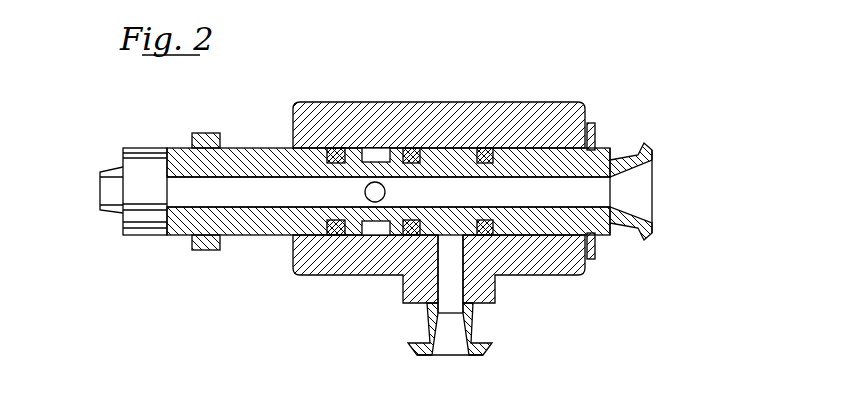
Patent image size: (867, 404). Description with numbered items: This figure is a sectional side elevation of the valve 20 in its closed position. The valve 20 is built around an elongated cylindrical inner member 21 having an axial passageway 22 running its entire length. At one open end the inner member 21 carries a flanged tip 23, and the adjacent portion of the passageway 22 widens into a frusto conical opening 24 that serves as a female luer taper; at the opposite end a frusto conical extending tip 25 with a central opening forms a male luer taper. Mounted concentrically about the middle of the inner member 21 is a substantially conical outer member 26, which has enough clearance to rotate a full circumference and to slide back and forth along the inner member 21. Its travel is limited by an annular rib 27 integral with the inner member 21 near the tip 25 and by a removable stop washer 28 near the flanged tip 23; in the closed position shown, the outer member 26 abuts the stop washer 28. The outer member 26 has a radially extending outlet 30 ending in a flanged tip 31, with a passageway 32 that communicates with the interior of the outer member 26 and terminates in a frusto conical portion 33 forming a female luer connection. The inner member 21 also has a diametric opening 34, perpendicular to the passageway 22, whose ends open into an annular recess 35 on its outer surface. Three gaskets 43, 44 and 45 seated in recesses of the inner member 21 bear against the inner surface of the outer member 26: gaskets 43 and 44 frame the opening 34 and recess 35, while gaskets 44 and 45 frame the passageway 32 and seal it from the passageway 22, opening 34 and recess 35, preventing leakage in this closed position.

The valve 20 is at (503, 95).
The inner member 21 is at (265, 152).
The axial passageway 22 is at (298, 192).
The flanged tip 23 is at (647, 148).
The frusto conical opening 24 is at (640, 187).
The frusto conical extending tip 25 is at (112, 174).
The outer member 26 is at (380, 103).
The annular rib 27 is at (202, 242).
The stop washer 28 is at (594, 122).
The outlet 30 is at (492, 307).
The flanged tip 31 is at (487, 352).
The passageway 32 is at (448, 295).
The frusto conical portion 33 is at (450, 343).
The diametric opening 34 is at (385, 193).
The annular recess 35 is at (368, 155).
The gasket 43 is at (335, 234).
The gasket 44 is at (416, 234).
The gasket 45 is at (487, 234).